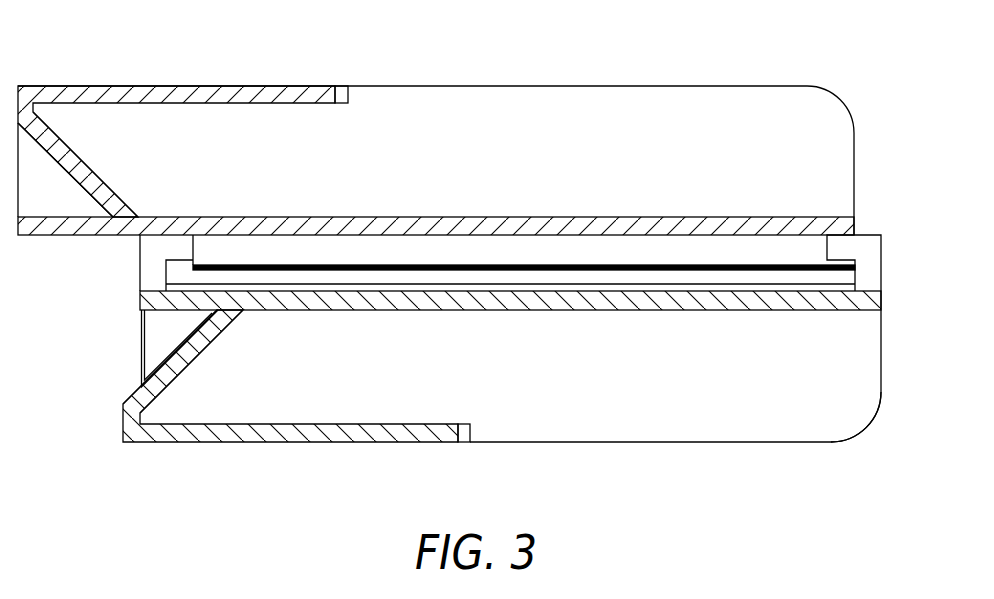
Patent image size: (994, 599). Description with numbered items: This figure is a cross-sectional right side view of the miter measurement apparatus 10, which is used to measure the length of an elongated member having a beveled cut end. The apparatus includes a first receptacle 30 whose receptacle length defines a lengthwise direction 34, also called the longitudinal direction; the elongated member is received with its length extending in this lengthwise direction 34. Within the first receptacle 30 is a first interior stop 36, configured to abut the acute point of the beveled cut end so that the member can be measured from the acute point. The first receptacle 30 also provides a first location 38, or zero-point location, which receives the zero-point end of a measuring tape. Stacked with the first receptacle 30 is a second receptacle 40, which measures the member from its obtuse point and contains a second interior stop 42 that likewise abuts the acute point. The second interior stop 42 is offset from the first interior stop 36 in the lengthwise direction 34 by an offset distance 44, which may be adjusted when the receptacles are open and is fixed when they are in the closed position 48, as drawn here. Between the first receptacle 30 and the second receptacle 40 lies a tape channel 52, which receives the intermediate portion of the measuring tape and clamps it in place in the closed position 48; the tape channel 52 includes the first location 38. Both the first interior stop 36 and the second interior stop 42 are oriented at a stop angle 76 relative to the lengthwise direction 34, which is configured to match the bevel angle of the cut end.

The measurement apparatus 10 is at (675, 67).
The first receptacle 30 is at (730, 443).
The lengthwise direction 34 is at (130, 60).
The first interior stop 36 is at (214, 341).
The first location 38 is at (140, 311).
The second receptacle 40 is at (788, 86).
The second interior stop 42 is at (119, 198).
The offset distance 44 is at (33, 103).
The closed position 48 is at (884, 419).
The tape channel 52 is at (119, 263).
The stop angle 76 is at (97, 106).